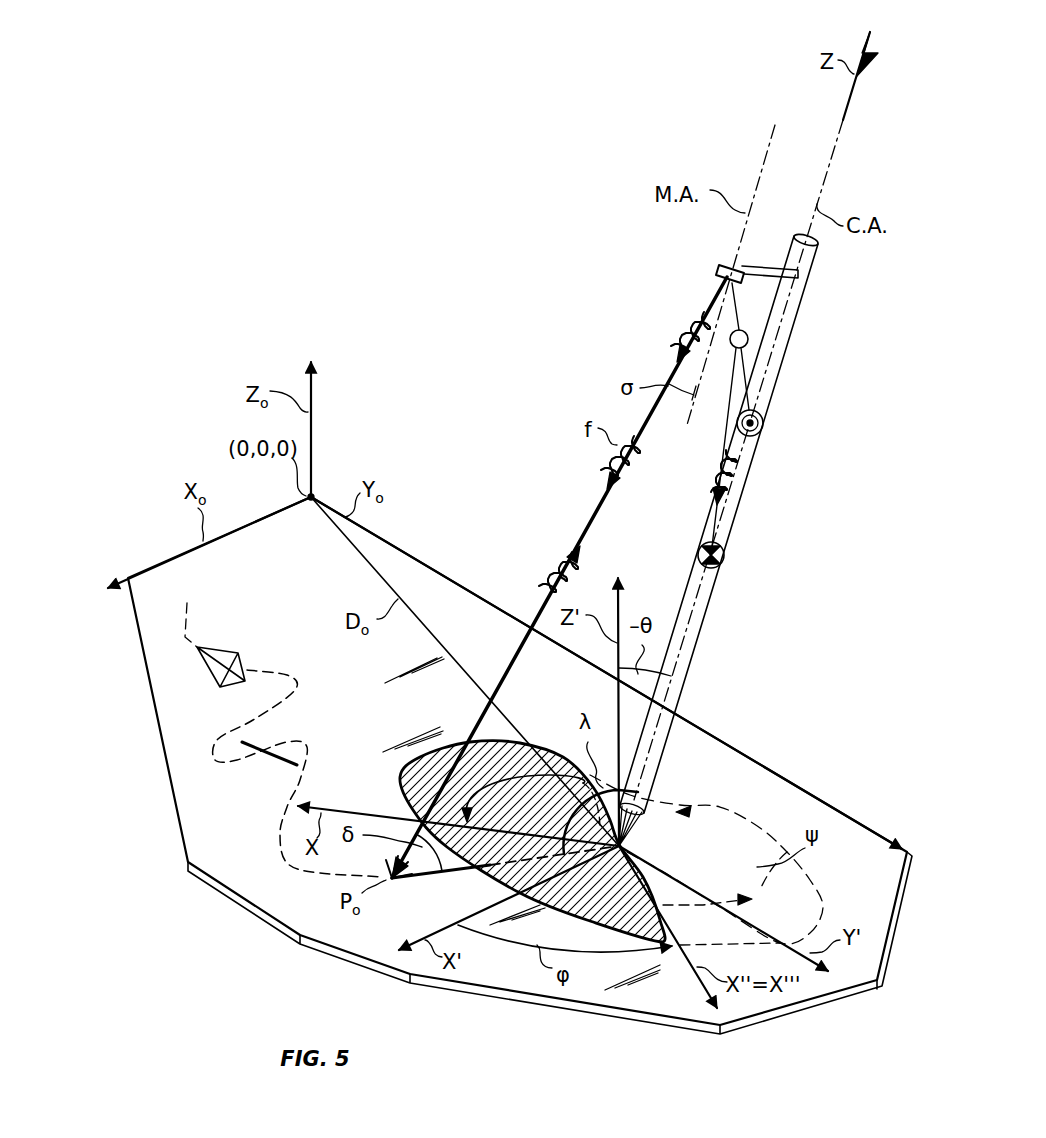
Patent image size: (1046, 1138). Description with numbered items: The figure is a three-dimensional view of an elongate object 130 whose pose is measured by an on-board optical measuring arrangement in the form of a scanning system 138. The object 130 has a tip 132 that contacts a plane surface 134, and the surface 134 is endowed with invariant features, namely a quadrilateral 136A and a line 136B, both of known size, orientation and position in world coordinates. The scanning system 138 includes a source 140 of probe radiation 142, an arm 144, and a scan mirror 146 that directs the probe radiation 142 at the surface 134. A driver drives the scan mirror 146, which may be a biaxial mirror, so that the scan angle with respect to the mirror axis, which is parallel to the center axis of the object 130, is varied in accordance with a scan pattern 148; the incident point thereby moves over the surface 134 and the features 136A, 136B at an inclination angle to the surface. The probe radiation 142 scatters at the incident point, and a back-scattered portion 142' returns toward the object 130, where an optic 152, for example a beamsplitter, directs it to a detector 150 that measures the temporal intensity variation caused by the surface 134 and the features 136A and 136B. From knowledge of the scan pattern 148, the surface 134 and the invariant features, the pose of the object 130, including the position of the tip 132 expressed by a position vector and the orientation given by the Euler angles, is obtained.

The elongate object 130 is at (707, 613).
The tip 132 is at (632, 846).
The plane surface 134 is at (757, 787).
The quadrilateral 136A is at (205, 670).
The line 136B is at (277, 765).
The scanning system 138 is at (600, 288).
The source 140 is at (765, 425).
The probe radiation 142 is at (658, 332).
The back-scattered portion 142' is at (604, 514).
The arm 144 is at (763, 270).
The scan mirror 146 is at (713, 267).
The scan pattern 148 is at (277, 843).
The detector 150 is at (725, 556).
The optic 152 is at (748, 340).